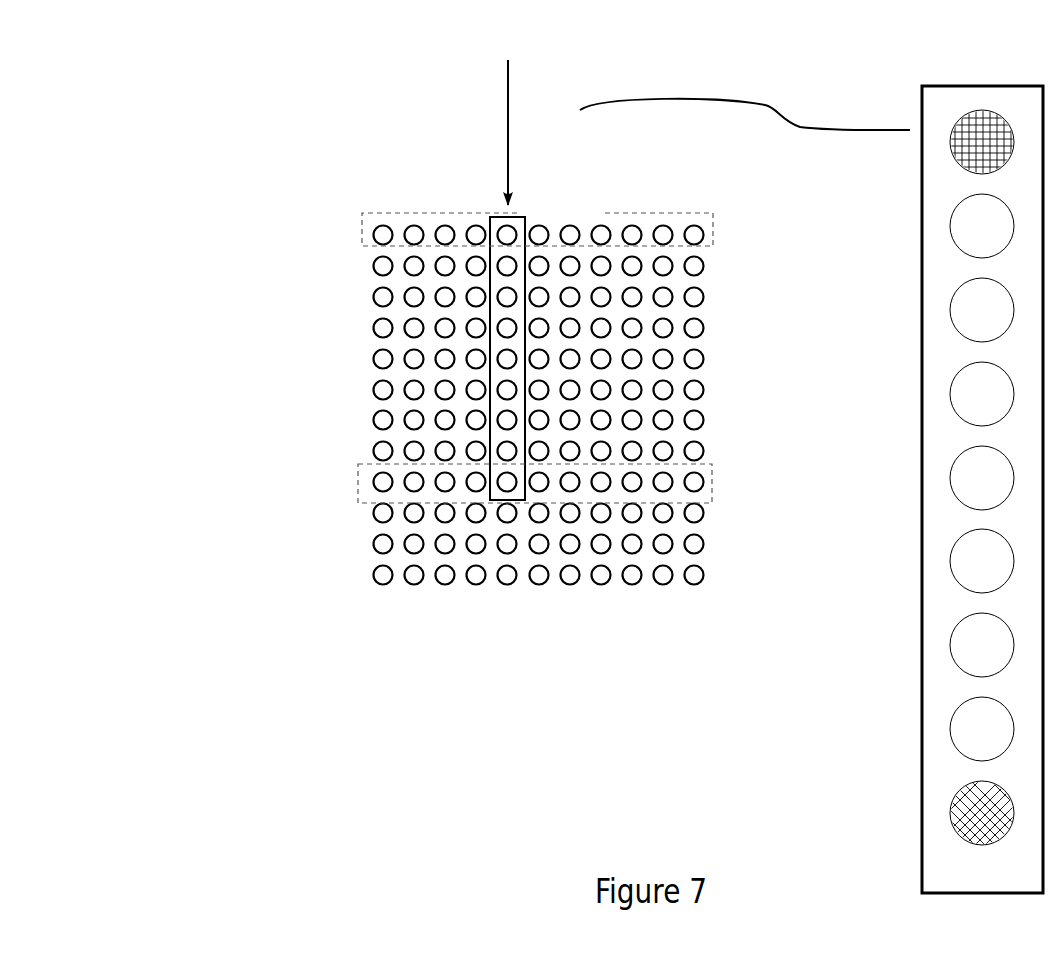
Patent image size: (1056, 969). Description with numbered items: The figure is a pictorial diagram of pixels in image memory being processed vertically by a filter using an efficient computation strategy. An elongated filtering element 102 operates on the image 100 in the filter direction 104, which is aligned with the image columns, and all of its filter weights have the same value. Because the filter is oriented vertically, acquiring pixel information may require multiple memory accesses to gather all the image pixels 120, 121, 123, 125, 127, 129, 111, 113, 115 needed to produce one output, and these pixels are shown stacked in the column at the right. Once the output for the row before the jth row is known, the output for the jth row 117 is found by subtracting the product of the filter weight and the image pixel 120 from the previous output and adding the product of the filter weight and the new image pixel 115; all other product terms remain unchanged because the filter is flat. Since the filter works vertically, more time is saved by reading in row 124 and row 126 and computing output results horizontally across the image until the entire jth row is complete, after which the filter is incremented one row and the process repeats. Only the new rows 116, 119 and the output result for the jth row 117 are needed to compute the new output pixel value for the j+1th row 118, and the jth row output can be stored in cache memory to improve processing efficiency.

The image 100 is at (506, 405).
The elongated filtering element 102 is at (525, 217).
The filter direction 104 is at (508, 80).
The new row 116 is at (360, 267).
The jth row 117 is at (922, 472).
The j+1th row 118 is at (360, 392).
The new row 119 is at (345, 518).
The row 124 is at (713, 230).
The row 126 is at (715, 483).
The image pixel 120 is at (982, 142).
The image pixel 121 is at (982, 226).
The image pixel 123 is at (982, 310).
The image pixel 125 is at (982, 394).
The image pixel 127 is at (982, 478).
The image pixel 129 is at (982, 561).
The image pixel 111 is at (982, 645).
The image pixel 113 is at (982, 729).
The new image pixel 115 is at (985, 830).